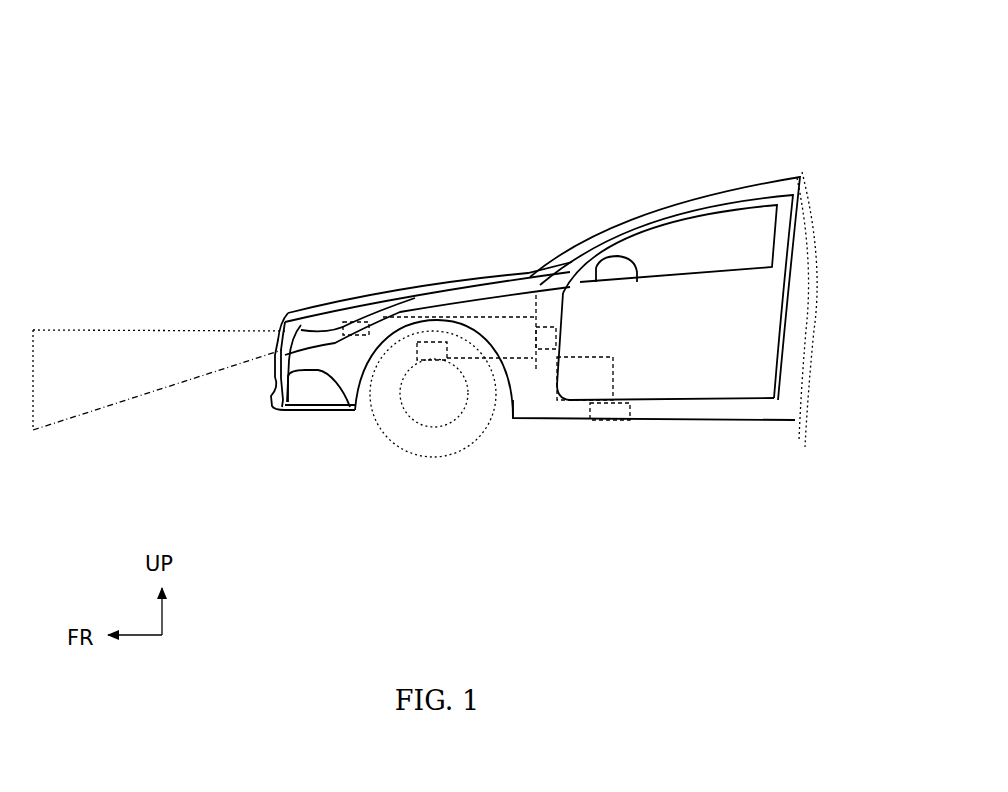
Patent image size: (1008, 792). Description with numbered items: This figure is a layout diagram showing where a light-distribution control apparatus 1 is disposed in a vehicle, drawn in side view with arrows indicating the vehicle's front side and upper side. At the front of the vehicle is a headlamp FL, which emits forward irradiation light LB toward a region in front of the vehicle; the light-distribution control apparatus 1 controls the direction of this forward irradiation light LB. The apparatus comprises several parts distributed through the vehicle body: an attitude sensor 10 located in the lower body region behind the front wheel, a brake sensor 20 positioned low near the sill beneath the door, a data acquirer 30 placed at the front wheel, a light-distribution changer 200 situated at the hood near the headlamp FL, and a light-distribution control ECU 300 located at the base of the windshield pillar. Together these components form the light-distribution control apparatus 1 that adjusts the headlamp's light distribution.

The light-distribution control apparatus 1 is at (579, 260).
The attitude sensor 10 is at (572, 347).
The brake sensor 20 is at (614, 414).
The data acquirer 30 is at (428, 377).
The light-distribution changer 200 is at (373, 306).
The light-distribution control ECU 300 is at (533, 289).
The headlamp FL is at (324, 332).
The forward irradiation light LB is at (93, 326).